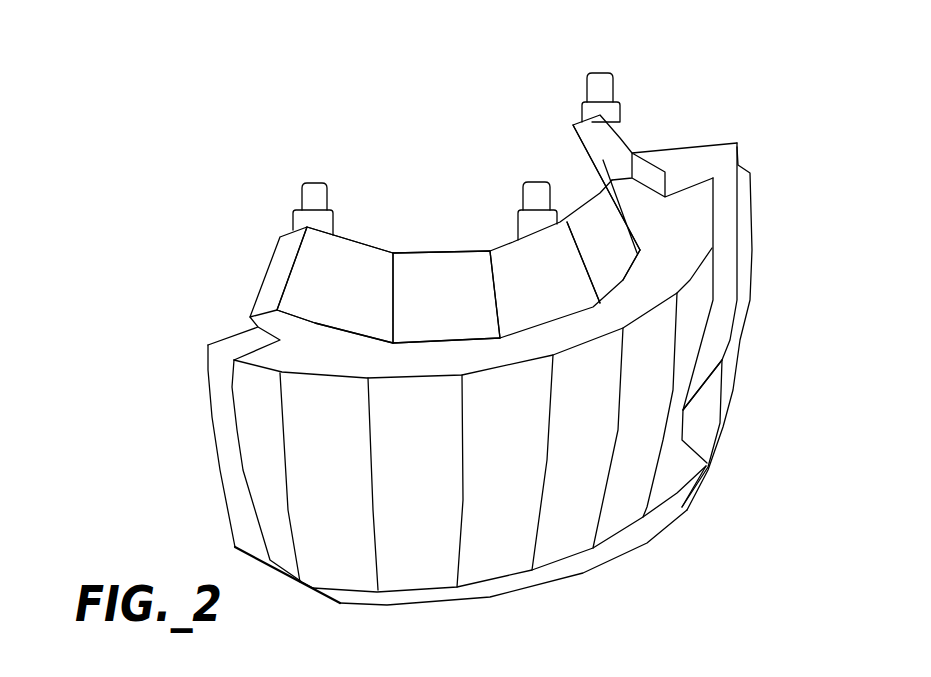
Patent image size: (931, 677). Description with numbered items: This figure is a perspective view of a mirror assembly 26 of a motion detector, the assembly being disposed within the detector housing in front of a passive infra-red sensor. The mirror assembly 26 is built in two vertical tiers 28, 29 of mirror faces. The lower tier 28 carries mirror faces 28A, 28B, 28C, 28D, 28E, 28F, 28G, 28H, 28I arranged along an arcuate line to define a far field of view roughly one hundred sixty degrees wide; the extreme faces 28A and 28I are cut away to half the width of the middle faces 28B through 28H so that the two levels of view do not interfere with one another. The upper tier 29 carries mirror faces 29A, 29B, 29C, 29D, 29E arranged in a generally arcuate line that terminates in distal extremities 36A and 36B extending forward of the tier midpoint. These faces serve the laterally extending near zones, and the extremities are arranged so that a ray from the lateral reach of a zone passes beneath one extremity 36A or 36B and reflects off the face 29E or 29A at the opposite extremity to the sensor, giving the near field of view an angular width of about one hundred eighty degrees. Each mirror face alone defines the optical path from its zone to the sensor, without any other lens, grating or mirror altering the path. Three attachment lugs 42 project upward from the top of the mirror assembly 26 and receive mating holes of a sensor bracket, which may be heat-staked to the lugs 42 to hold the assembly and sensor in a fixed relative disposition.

The mirror assembly 26 is at (178, 337).
The mirror tier 28 is at (202, 452).
The mirror face 28A is at (287, 558).
The mirror face 28B is at (338, 573).
The mirror face 28C is at (413, 573).
The mirror face 28D is at (493, 565).
The mirror face 28E is at (562, 545).
The mirror face 28F is at (620, 517).
The mirror face 28G is at (670, 503).
The mirror face 28H is at (672, 480).
The mirror face 28I is at (700, 438).
The mirror tier 29 is at (256, 270).
The mirror face 29A is at (352, 258).
The mirror face 29B is at (413, 268).
The mirror face 29C is at (510, 257).
The mirror face 29D is at (597, 210).
The mirror face 29E is at (613, 198).
The distal extremity 36A is at (290, 247).
The distal extremity 36B is at (605, 155).
The attachment lug 42 is at (313, 180).